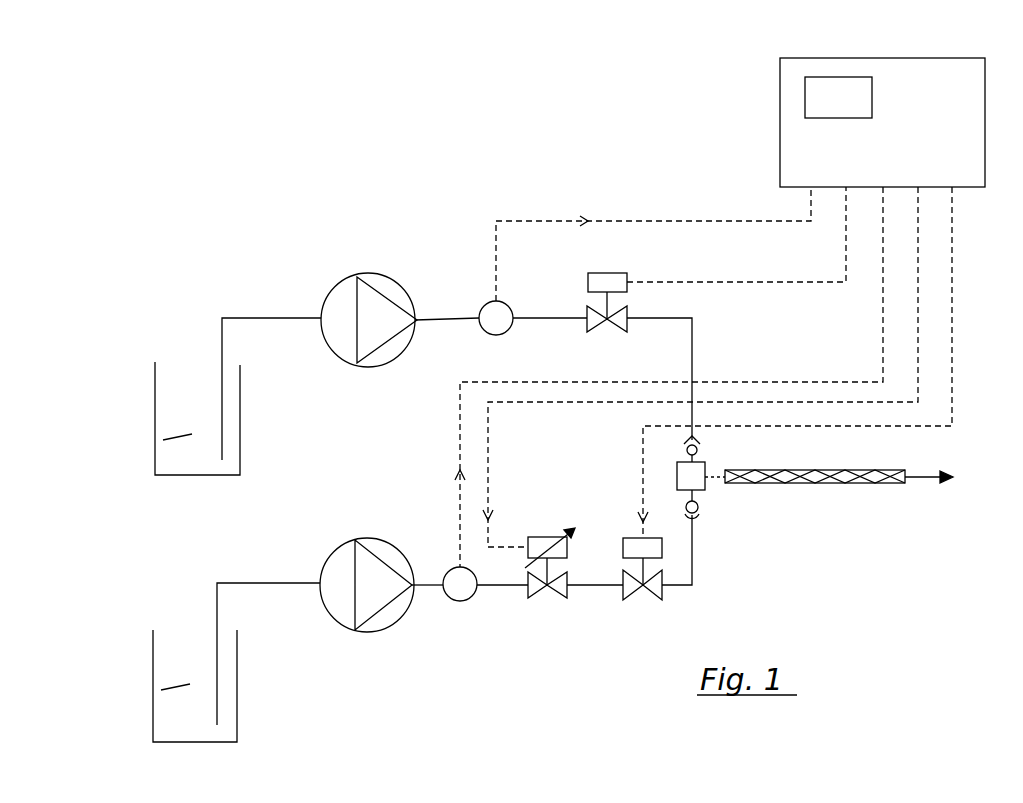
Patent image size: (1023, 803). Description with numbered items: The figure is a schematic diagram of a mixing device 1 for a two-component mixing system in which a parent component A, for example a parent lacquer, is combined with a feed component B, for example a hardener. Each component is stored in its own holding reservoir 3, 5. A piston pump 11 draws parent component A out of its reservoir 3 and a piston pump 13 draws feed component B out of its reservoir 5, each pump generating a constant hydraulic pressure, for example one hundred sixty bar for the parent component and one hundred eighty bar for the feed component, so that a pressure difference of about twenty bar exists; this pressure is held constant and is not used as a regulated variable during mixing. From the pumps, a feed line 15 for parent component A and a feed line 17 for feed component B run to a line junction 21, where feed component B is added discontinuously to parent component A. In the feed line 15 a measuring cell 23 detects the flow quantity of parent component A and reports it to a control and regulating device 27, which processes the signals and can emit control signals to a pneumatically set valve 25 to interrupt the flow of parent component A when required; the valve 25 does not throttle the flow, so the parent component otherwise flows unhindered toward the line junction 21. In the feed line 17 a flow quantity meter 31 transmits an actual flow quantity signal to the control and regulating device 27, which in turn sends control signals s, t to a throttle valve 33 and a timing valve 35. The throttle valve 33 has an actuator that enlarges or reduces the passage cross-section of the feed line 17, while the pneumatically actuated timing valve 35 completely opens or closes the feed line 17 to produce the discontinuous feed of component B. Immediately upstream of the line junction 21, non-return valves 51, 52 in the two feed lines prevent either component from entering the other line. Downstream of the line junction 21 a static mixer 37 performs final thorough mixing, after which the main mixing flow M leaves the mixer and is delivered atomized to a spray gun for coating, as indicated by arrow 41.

The mixing device 1 is at (466, 200).
The holding reservoir 3 is at (241, 437).
The holding reservoir 5 is at (238, 707).
The piston pump 11 is at (392, 275).
The piston pump 13 is at (390, 628).
The feed line 15 is at (445, 318).
The feed line 17 is at (425, 580).
The line junction 21 is at (700, 488).
The measuring cell 23 is at (500, 312).
The valve 25 is at (620, 274).
The control and regulating device 27 is at (935, 135).
The flow quantity meter 31 is at (465, 601).
The throttle valve 33 is at (553, 600).
The timing valve 35 is at (645, 601).
The static mixer 37 is at (833, 484).
The arrow 41 is at (930, 472).
The non-return valve 51 is at (701, 440).
The non-return valve 52 is at (697, 516).
The main mixing flow M is at (883, 484).
The control signal s is at (490, 487).
The control signal t is at (640, 488).